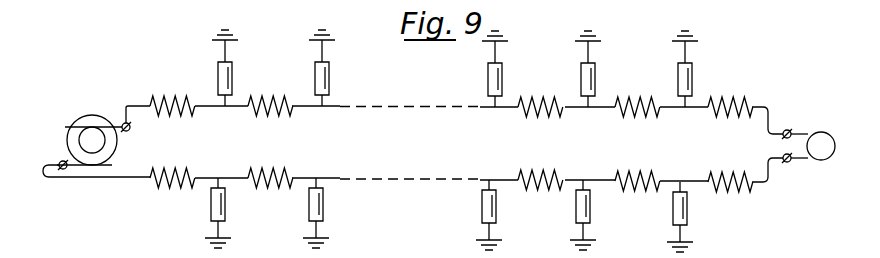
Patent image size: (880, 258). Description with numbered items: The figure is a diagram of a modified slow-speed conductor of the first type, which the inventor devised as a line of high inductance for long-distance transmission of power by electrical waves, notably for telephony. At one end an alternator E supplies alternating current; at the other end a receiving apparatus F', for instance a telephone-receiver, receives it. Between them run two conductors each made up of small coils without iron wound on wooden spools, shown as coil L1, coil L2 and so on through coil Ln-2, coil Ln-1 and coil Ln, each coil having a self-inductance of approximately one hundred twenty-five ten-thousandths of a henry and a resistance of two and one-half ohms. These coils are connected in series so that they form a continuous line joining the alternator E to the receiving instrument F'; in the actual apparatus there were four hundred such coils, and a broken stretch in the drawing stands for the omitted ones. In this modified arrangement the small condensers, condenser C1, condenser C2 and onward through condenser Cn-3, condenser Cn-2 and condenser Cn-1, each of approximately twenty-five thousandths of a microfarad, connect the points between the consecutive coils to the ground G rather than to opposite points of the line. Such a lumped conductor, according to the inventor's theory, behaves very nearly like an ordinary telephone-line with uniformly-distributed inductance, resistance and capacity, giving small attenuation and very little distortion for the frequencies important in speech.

The alternator E is at (86, 114).
The receiving apparatus F' is at (821, 134).
The coil L1 is at (172, 147).
The condenser C1 is at (193, 228).
The coil L2 is at (270, 146).
The condenser C2 is at (300, 228).
The condenser Cn-3 is at (470, 220).
The coil Ln-2 is at (539, 148).
The condenser Cn-2 is at (564, 142).
The coil Ln-1 is at (637, 147).
The condenser Cn-1 is at (665, 141).
The coil Ln is at (730, 146).
The ground G is at (229, 44).